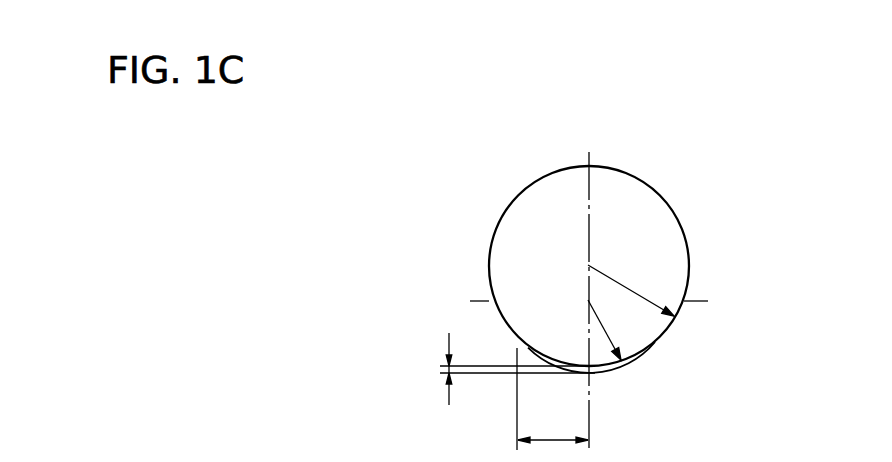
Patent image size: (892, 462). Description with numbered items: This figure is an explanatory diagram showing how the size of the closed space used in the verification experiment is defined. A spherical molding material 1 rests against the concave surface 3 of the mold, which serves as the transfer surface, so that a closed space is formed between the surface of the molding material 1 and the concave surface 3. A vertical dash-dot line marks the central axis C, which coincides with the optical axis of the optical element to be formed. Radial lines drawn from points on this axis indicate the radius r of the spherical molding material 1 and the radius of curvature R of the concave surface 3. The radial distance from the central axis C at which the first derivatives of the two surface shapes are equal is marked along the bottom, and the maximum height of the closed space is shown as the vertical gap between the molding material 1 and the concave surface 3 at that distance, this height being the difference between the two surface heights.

The molding material 1 is at (688, 266).
The concave surface 3 is at (606, 370).
The central axis C is at (590, 282).
The ball radius r is at (631, 290).
The groove radius of curvature R is at (609, 330).